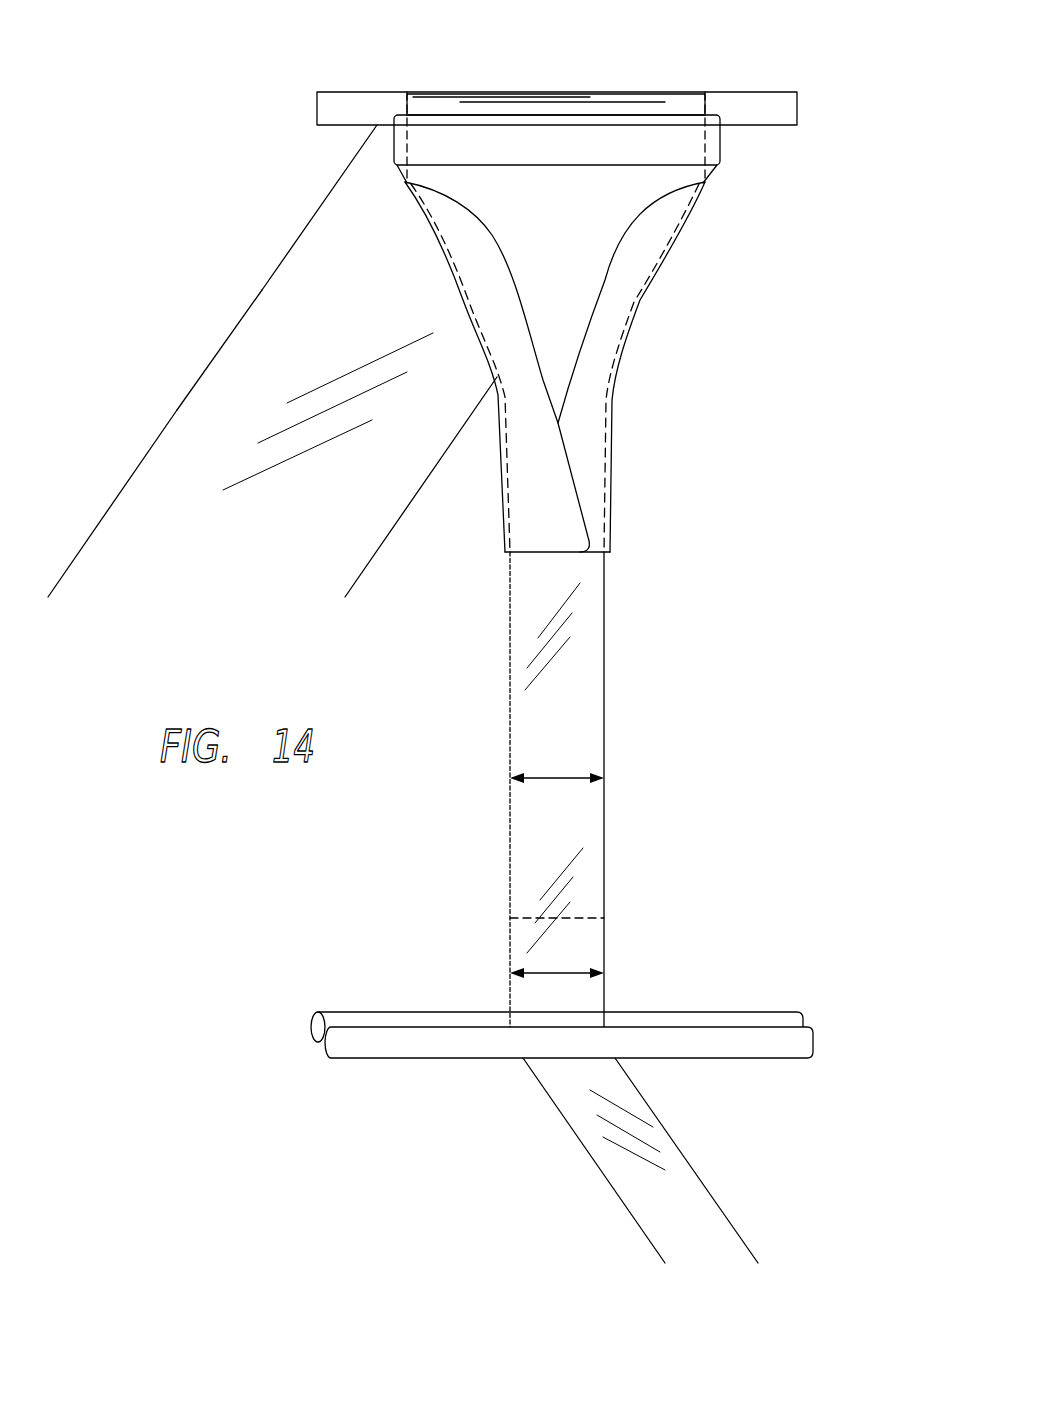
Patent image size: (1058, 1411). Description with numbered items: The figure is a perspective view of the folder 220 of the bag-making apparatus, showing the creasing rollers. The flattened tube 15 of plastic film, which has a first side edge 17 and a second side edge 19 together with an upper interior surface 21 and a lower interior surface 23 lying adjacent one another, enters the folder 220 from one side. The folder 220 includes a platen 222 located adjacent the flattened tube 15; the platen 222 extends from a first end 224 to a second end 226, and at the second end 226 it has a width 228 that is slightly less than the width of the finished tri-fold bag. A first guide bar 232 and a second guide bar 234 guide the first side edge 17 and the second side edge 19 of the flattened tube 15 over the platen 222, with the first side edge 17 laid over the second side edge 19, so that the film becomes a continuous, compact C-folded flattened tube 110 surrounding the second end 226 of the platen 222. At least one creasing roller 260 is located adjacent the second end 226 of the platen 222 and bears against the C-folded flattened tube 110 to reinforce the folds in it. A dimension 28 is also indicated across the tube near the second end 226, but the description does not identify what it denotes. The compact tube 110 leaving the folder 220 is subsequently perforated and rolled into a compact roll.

The flattened tube 15 is at (170, 482).
The first side edge 17 is at (178, 405).
The second side edge 19 is at (385, 540).
The upper interior surface 21 is at (262, 277).
The lower interior surface 23 is at (242, 365).
The width 28 is at (553, 970).
The C-folded flattened tube 110 is at (588, 658).
The folder 220 is at (680, 304).
The platen 222 is at (578, 597).
The first end 224 is at (560, 137).
The second end 226 is at (550, 915).
The width 228 is at (555, 778).
The first guide bar 232 is at (545, 530).
The second guide bar 234 is at (583, 400).
The creasing roller 260 is at (345, 1010).